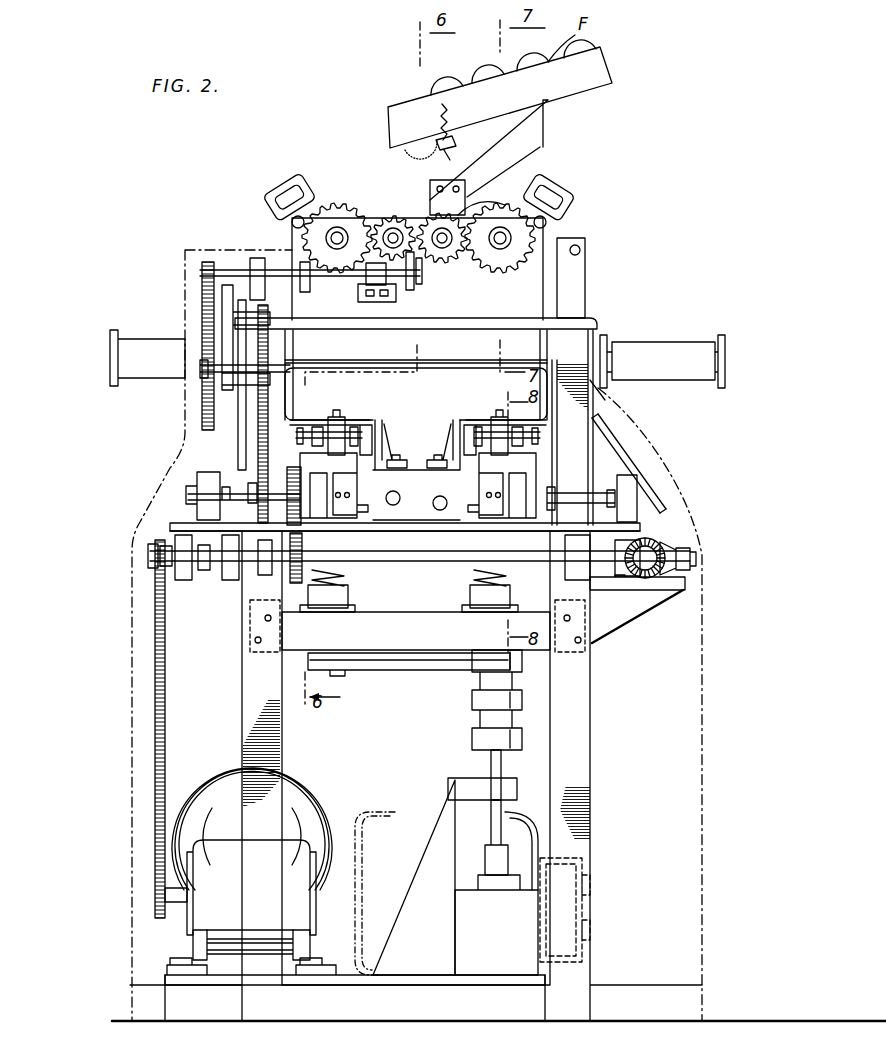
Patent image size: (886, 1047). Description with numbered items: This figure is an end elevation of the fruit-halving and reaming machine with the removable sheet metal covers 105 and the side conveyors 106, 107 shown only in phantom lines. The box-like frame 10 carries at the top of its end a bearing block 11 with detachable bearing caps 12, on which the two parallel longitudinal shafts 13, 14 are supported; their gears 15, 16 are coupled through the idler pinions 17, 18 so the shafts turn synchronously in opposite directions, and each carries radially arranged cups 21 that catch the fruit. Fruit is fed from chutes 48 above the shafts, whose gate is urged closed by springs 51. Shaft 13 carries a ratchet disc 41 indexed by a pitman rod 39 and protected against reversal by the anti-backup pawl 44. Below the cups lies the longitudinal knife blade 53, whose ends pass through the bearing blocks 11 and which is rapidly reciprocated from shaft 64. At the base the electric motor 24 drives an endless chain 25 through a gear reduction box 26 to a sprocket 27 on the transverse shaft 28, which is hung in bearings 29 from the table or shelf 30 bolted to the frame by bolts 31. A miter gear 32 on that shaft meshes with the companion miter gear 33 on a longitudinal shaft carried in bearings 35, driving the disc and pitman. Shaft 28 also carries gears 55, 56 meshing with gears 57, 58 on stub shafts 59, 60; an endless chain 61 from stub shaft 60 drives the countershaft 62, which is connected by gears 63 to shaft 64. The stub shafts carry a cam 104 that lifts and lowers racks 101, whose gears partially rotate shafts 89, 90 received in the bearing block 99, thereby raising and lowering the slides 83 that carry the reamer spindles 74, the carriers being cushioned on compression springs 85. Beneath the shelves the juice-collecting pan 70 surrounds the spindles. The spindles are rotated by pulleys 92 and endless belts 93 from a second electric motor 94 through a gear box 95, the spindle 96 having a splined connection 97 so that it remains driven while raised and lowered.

The frame 10 is at (593, 720).
The bearing blocks 11 is at (525, 300).
The detachable bearing caps 12 is at (298, 238).
The shaft 13 is at (500, 246).
The shaft 14 is at (340, 228).
The gear 15 is at (502, 214).
The gear 16 is at (385, 215).
The idler pinion 17 is at (448, 252).
The idler pinion 18 is at (378, 264).
The cups 21 is at (295, 194).
The electric motor 24 is at (302, 810).
The endless chain 25 is at (165, 720).
The gear reduction box 26 is at (290, 915).
The sprocket 27 is at (150, 556).
The transversely extending shaft 28 is at (412, 562).
The bearings 29 is at (232, 580).
The table or shelf 30 is at (172, 527).
The bolts 31 is at (568, 492).
The miter gear 32 is at (672, 555).
The companion miter gear 33 is at (652, 545).
The bearings 35 is at (682, 586).
The pitman rod 39 is at (606, 446).
The ratchet disc 41 is at (486, 205).
The spring actuated anti-backup pawl 44 is at (578, 240).
The chutes 48 is at (596, 72).
The springs 51 is at (448, 112).
The knife blade 53 is at (420, 282).
The gear 55 is at (565, 598).
The gear 56 is at (292, 560).
The gear 57 is at (540, 466).
The gear 58 is at (287, 490).
The stub shaft 59 is at (600, 490).
The stub shaft 60 is at (188, 497).
The endless chain 61 is at (258, 449).
The countershaft 62 is at (252, 376).
The gears 63 is at (202, 322).
The shaft 64 is at (240, 268).
The juice-collecting pan 70 is at (416, 390).
The reamer spindles 74 is at (342, 428).
The slides 83 is at (290, 432).
The compression springs 85 is at (342, 576).
The shaft 89 is at (440, 496).
The shaft 90 is at (398, 502).
The pulleys 92 is at (508, 700).
The endless belts 93 is at (437, 668).
The second electric motor 94 is at (412, 814).
The gear box 95 is at (522, 916).
The spindle 96 is at (500, 765).
The splined connection 97 is at (494, 832).
The bearing block 99 is at (412, 470).
The racks 101 is at (473, 430).
The cam 104 is at (488, 500).
The removable sheet metal covers 105 is at (705, 641).
The conveyor 106 is at (112, 356).
The conveyor 107 is at (667, 341).